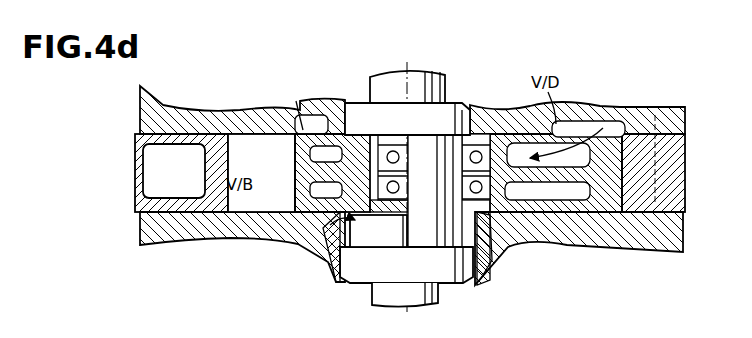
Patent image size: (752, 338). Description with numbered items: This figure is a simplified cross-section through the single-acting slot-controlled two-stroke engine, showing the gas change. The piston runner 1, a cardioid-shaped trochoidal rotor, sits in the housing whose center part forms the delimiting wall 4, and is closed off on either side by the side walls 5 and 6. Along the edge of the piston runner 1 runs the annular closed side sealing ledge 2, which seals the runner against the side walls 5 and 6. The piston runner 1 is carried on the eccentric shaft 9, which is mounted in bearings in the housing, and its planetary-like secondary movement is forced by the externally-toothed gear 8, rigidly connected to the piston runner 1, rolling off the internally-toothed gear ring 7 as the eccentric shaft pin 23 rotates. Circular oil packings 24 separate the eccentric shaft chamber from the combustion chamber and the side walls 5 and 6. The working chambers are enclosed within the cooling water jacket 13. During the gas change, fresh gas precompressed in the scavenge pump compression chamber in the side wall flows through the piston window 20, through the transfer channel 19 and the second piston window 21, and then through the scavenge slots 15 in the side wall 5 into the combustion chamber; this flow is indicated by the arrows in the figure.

The piston runner 1 is at (297, 175).
The side sealing ledge 2 is at (302, 142).
The delimiting wall 4 is at (218, 163).
The side wall 5 is at (258, 136).
The side wall 6 is at (276, 213).
The internally-toothed gear ring 7 is at (332, 262).
The externally-toothed gear 8 is at (398, 248).
The eccentric shaft 9 is at (367, 80).
The cooling water jacket 13 is at (150, 178).
The scavenge slots 15 is at (291, 106).
The transfer channel 19 is at (524, 132).
The piston window 20 is at (583, 121).
The second piston window 21 is at (330, 125).
The eccentric shaft pin 23 is at (492, 235).
The oil packings 24 is at (421, 256).